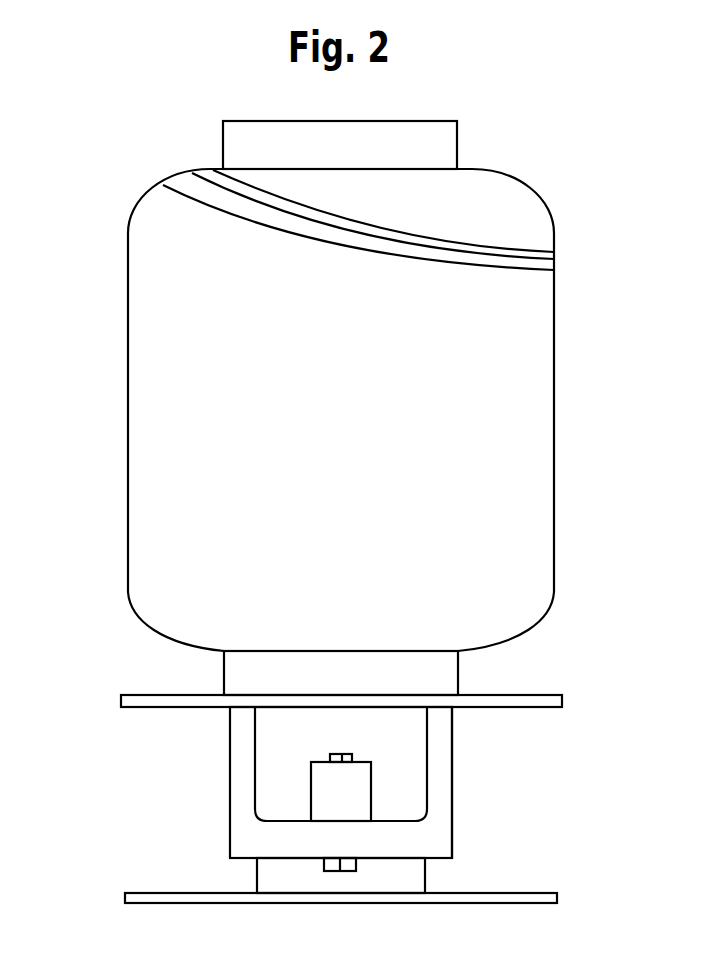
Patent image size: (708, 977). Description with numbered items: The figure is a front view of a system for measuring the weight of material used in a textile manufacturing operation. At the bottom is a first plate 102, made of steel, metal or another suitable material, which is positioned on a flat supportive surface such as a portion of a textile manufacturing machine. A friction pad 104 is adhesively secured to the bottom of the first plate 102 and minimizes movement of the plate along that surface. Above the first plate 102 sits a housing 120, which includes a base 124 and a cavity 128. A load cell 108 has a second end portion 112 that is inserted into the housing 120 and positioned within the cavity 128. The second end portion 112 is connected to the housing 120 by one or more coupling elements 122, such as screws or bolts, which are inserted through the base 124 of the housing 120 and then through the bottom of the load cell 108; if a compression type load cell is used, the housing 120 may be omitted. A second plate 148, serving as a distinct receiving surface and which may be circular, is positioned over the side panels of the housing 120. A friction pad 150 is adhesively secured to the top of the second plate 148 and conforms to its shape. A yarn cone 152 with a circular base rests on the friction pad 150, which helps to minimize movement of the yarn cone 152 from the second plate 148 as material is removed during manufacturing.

The first plate 102 is at (118, 897).
The friction pad 104 is at (332, 908).
The load cell 108 is at (383, 796).
The second end portion 112 is at (377, 772).
The housing 120 is at (218, 788).
The coupling elements 122 is at (363, 873).
The base 124 is at (445, 862).
The cavity 128 is at (393, 745).
The second plate 148 is at (110, 700).
The friction pad 150 is at (533, 687).
The yarn cone 152 is at (105, 392).